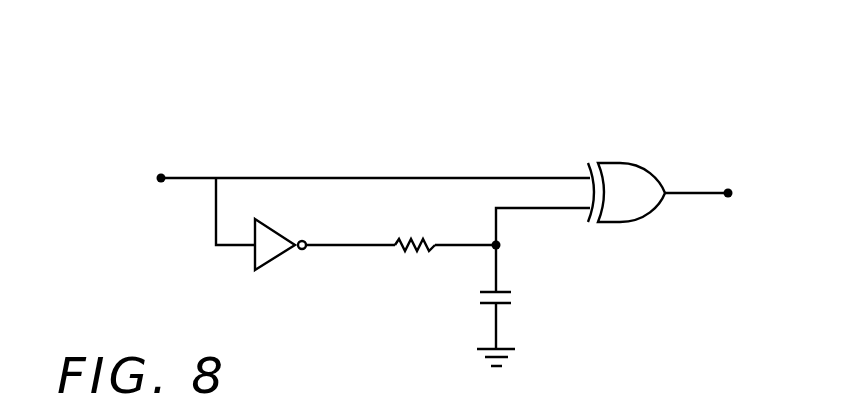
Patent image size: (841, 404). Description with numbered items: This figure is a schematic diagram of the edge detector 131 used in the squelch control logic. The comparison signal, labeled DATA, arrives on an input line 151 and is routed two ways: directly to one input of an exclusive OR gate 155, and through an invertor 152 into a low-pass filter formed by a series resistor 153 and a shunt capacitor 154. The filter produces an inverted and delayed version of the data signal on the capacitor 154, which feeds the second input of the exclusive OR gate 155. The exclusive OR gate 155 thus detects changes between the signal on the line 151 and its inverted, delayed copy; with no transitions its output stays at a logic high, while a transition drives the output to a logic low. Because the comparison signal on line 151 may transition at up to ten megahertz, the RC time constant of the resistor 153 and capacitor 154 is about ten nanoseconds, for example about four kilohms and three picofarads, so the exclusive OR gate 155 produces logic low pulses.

The edge detector 131 is at (580, 93).
The input line 151 is at (428, 177).
The invertor 152 is at (278, 256).
The series resistor 153 is at (432, 243).
The shunt capacitor 154 is at (507, 292).
The exclusive OR gate 155 is at (630, 163).